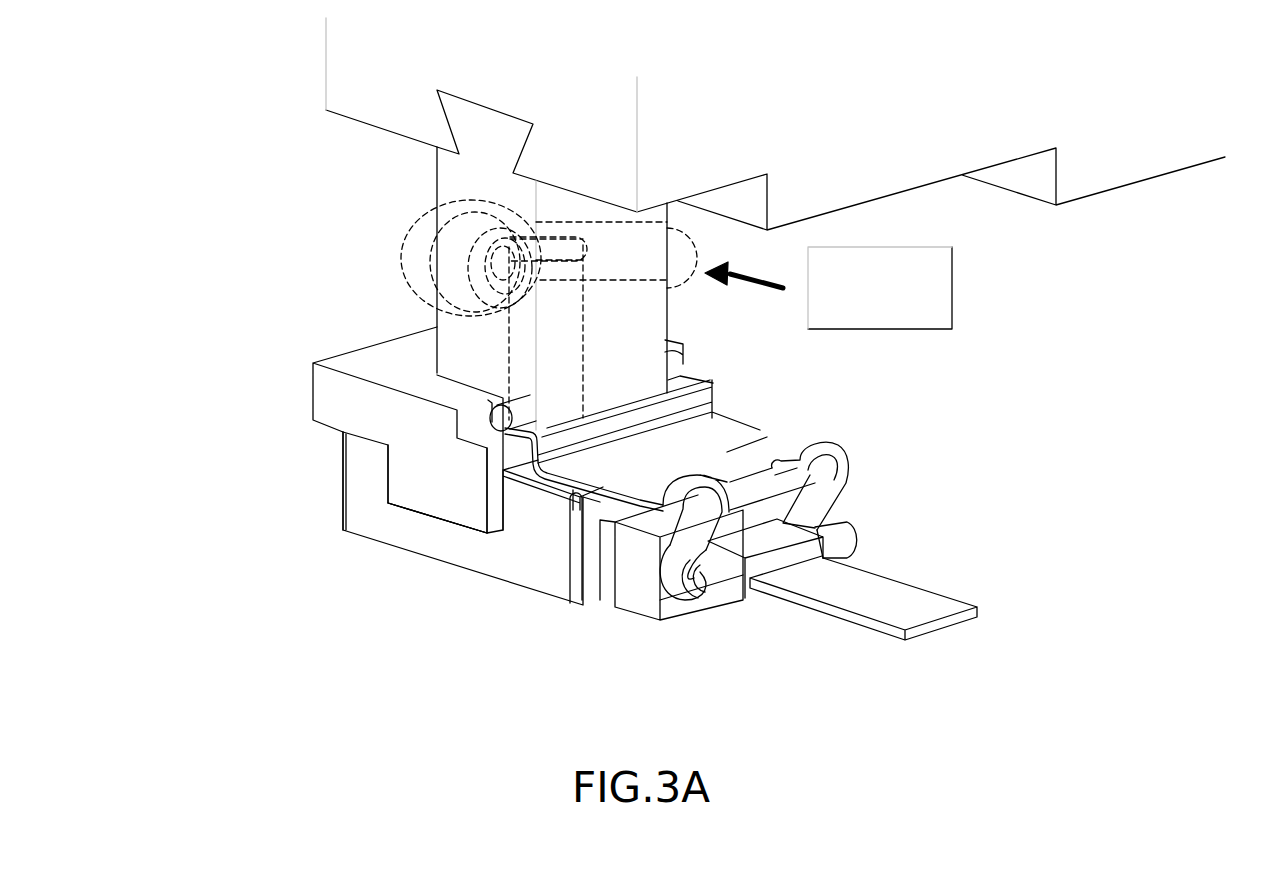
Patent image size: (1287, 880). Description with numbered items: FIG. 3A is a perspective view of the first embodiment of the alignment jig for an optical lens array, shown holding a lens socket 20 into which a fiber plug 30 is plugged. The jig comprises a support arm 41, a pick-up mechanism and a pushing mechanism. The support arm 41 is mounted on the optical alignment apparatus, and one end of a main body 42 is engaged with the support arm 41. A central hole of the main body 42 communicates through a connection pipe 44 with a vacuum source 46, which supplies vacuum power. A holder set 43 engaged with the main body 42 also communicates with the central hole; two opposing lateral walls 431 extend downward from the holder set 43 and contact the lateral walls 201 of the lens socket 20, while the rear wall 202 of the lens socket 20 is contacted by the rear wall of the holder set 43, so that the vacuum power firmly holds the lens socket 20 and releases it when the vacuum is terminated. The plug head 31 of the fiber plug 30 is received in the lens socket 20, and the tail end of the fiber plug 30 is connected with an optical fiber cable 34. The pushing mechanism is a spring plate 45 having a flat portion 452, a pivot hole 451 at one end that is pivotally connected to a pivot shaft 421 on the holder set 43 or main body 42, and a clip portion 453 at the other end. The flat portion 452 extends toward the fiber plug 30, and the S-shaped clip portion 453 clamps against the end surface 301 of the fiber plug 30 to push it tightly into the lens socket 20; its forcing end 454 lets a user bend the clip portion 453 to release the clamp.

The support arm 41 is at (352, 78).
The main body 42 is at (445, 310).
The pivot shaft 421 is at (492, 412).
The holder set 43 is at (323, 392).
The lateral wall 431 is at (407, 483).
The connection pipe 44 is at (412, 232).
The spring plate 45 is at (717, 430).
The pivot hole 451 is at (687, 357).
The flat portion 452 is at (767, 438).
The clip portion 453 is at (827, 493).
The forcing end 454 is at (850, 538).
The vacuum source 46 is at (945, 272).
The lens socket 20 is at (393, 538).
The lateral wall of lens socket 201 is at (433, 537).
The rear wall of lens socket 202 is at (344, 455).
The fiber plug 30 is at (642, 603).
The end surface 301 is at (668, 610).
The plug head 31 is at (605, 585).
The optical fiber cable 34 is at (820, 590).